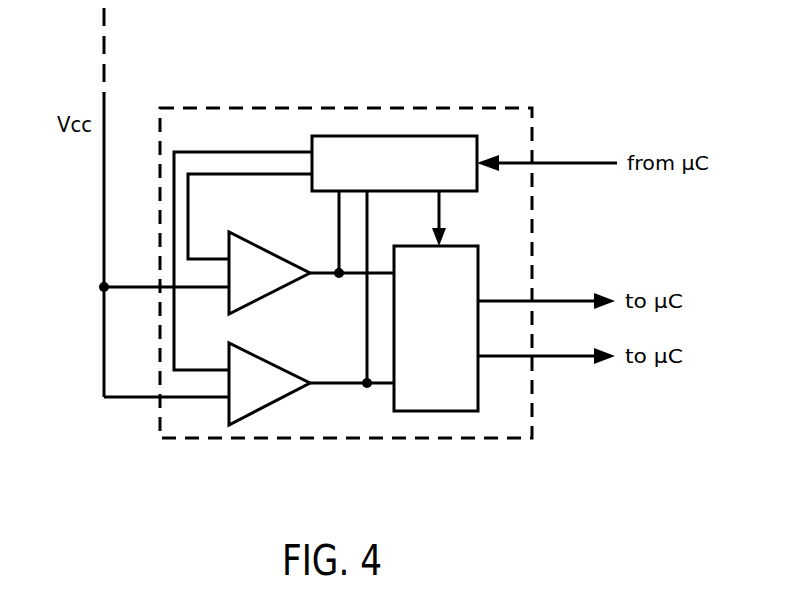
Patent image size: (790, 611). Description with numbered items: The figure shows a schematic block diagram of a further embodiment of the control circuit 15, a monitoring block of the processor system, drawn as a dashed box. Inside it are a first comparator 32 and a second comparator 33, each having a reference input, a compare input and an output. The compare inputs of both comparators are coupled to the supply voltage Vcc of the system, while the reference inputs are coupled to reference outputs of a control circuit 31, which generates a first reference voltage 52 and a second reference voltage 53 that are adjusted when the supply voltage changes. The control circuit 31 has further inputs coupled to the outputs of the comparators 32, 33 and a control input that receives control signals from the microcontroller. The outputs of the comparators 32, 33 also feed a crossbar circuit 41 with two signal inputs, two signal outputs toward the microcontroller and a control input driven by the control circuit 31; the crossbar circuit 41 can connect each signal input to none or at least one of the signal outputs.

The control circuit 15 is at (438, 108).
The control circuit 31 is at (338, 136).
The first comparator 32 is at (228, 303).
The second comparator 33 is at (226, 411).
The crossbar circuit 41 is at (482, 383).
The first reference voltage 52 is at (292, 174).
The second reference voltage 53 is at (225, 152).